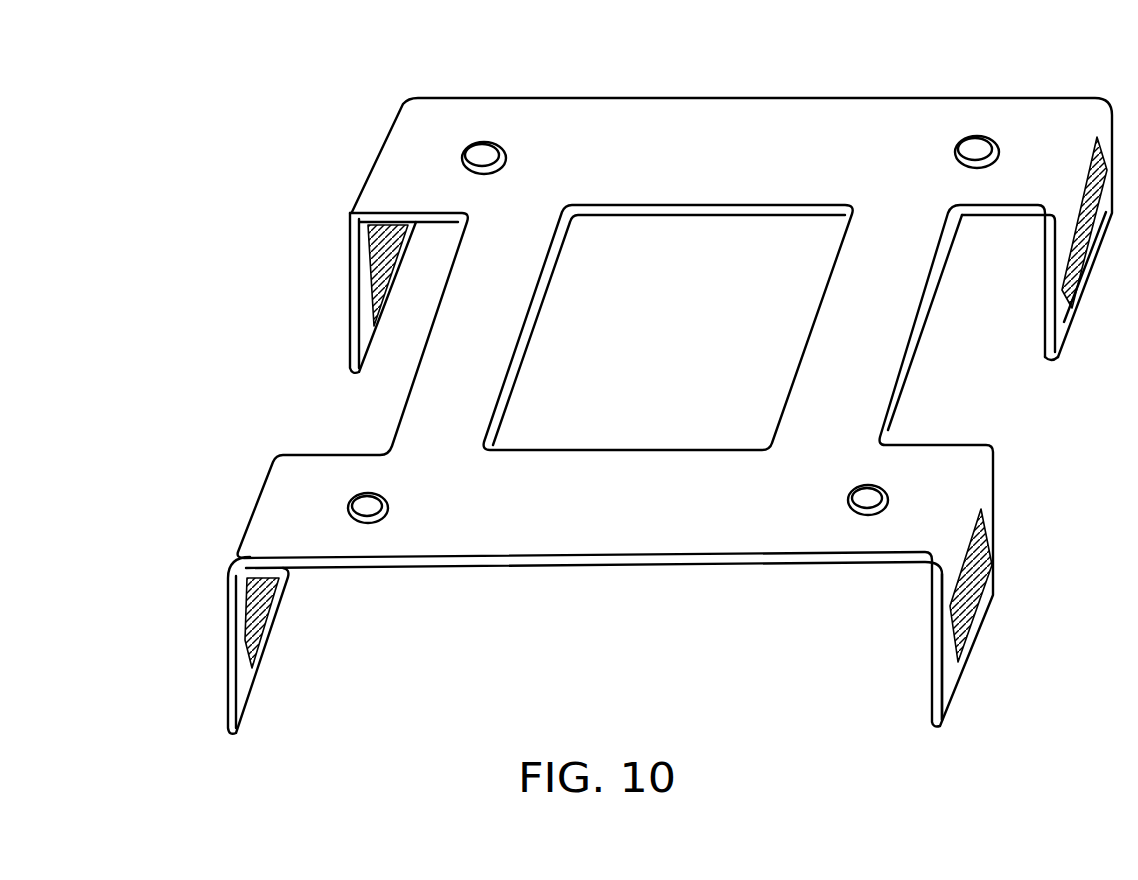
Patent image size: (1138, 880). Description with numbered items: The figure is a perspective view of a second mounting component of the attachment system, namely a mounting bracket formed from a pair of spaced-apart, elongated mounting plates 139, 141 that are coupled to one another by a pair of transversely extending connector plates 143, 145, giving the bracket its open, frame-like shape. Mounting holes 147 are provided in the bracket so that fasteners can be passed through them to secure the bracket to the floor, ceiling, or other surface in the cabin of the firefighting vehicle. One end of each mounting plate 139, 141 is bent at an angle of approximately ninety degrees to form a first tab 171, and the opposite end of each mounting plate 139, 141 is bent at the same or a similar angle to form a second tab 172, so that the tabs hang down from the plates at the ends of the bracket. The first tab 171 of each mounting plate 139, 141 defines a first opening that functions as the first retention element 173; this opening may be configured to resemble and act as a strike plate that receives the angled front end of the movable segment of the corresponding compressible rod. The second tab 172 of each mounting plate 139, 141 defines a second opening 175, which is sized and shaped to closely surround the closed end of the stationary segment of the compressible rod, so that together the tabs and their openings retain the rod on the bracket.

The mounting plate 139 is at (713, 124).
The mounting plate 141 is at (472, 522).
The connector plate 143 is at (506, 317).
The connector plate 145 is at (890, 324).
The mounting hole 147 is at (971, 162).
The first tab 171 is at (972, 633).
The second tab 172 is at (258, 661).
The first retention element 173 is at (963, 590).
The second opening 175 is at (253, 604).